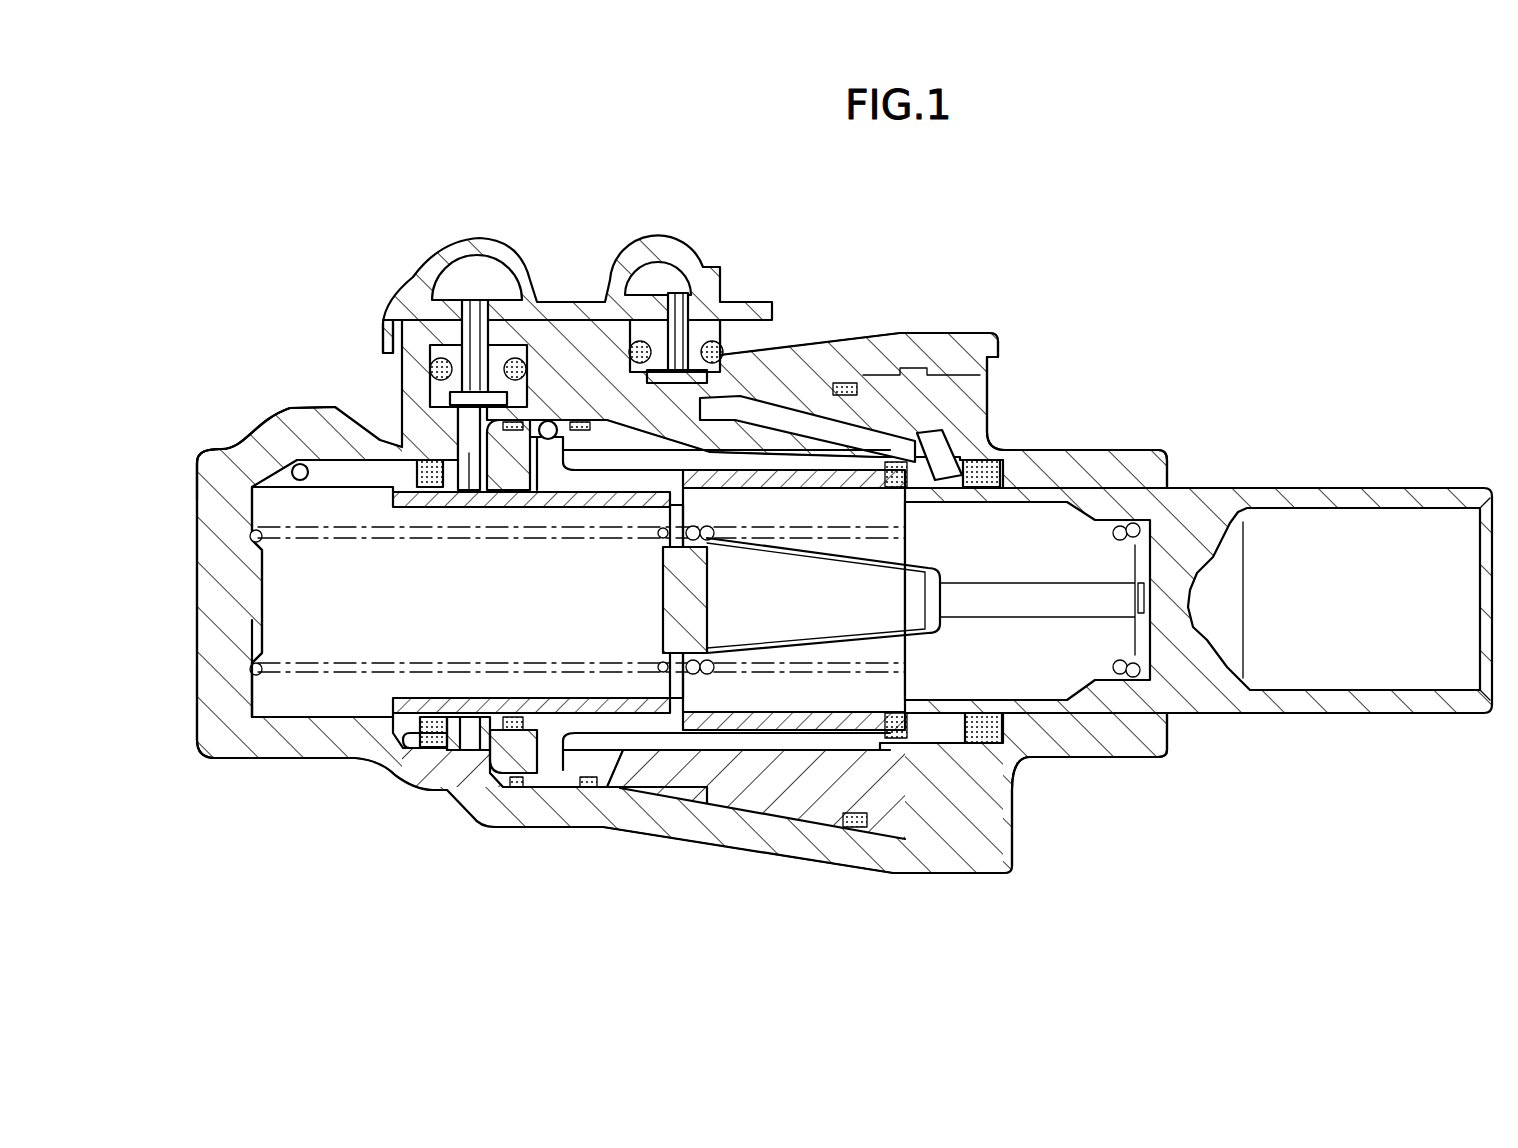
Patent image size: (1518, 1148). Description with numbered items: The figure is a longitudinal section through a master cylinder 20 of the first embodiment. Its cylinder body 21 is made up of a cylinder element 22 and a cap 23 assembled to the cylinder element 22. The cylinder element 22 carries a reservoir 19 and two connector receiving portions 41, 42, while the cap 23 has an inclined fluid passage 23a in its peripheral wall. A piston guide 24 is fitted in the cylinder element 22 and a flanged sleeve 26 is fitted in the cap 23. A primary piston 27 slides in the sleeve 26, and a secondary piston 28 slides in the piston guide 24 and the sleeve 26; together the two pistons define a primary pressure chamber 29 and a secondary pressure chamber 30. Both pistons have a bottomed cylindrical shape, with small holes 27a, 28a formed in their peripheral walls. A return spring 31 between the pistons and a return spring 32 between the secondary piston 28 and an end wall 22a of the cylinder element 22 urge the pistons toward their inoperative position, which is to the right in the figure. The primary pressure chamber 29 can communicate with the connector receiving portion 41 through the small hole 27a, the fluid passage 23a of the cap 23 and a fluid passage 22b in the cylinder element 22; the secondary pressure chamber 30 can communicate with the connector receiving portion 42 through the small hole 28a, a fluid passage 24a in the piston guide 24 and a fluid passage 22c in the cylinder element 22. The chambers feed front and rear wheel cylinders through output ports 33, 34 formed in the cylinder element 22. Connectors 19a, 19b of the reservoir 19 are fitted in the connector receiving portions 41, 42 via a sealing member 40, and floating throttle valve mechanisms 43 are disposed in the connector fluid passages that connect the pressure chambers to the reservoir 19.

The reservoir 19 is at (690, 257).
The connector 19a is at (637, 266).
The connector 19b is at (473, 258).
The master cylinder 20 is at (1153, 337).
The cylinder body 21 is at (955, 880).
The cylinder element 22 is at (225, 713).
The end wall 22a is at (233, 597).
The fluid passage 22b is at (700, 400).
The fluid passage 22c is at (463, 427).
The cap 23 is at (980, 797).
The inclined fluid passage 23a is at (940, 450).
The piston guide 24 is at (513, 737).
The fluid passage 24a is at (473, 500).
The sleeve 26 is at (820, 720).
The primary piston 27 is at (1210, 690).
The small hole 27a is at (913, 503).
The secondary piston 28 is at (557, 707).
The small hole 28a is at (440, 493).
The primary pressure chamber 29 is at (790, 700).
The secondary pressure chamber 30 is at (363, 703).
The return spring 31 is at (707, 680).
The return spring 32 is at (280, 710).
The output port 33 is at (552, 445).
The output port 34 is at (297, 487).
The sealing member 40 is at (527, 427).
The connector receiving portion 41 is at (757, 377).
The connector receiving portion 42 is at (403, 323).
The floating throttle valve mechanism 43 is at (447, 392).